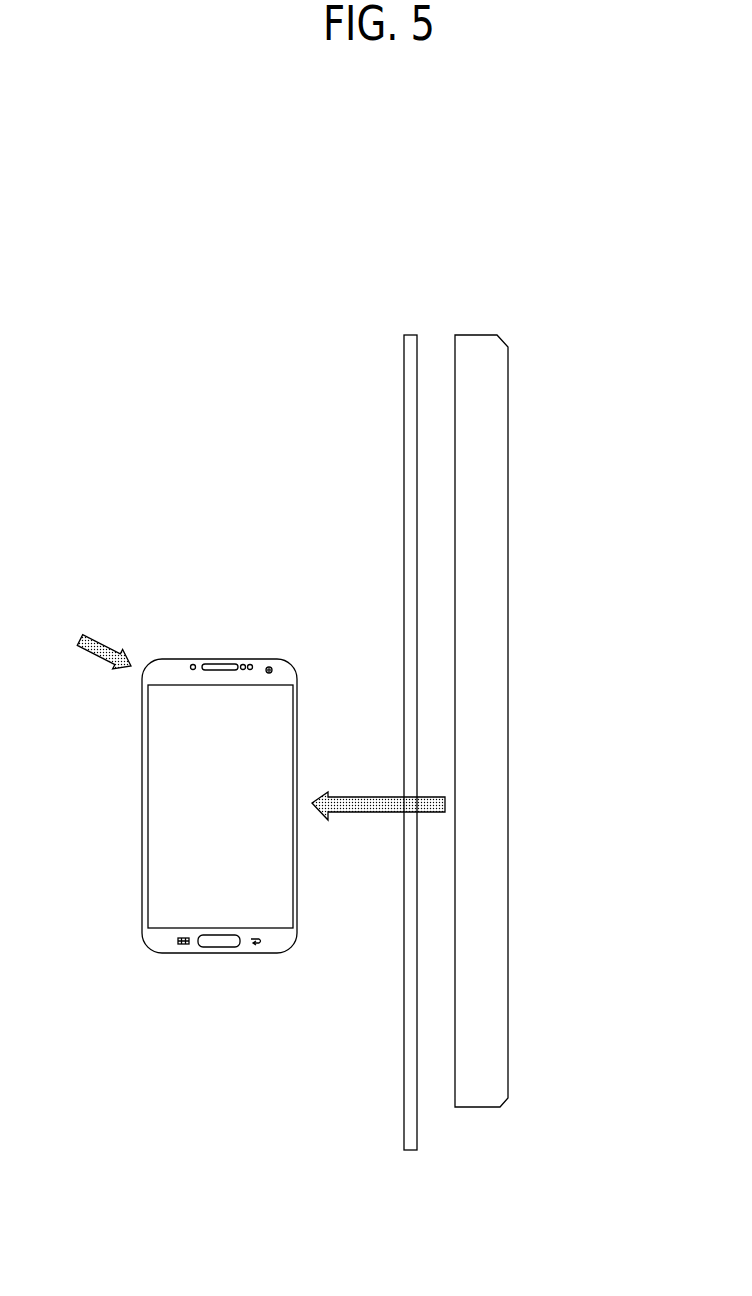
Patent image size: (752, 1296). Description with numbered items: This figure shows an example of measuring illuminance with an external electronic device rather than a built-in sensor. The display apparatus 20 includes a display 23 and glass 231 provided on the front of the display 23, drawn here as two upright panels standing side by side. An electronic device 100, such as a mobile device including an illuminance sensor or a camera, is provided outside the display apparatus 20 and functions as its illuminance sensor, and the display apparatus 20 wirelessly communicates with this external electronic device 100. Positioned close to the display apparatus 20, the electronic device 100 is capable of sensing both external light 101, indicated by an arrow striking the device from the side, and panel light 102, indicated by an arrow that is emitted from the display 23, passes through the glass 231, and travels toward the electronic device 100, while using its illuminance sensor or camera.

The display apparatus 20 is at (462, 708).
The display 23 is at (505, 488).
The glass 231 is at (404, 480).
The electronic device 100 is at (142, 815).
The external light 101 is at (82, 627).
The panel light 102 is at (360, 817).